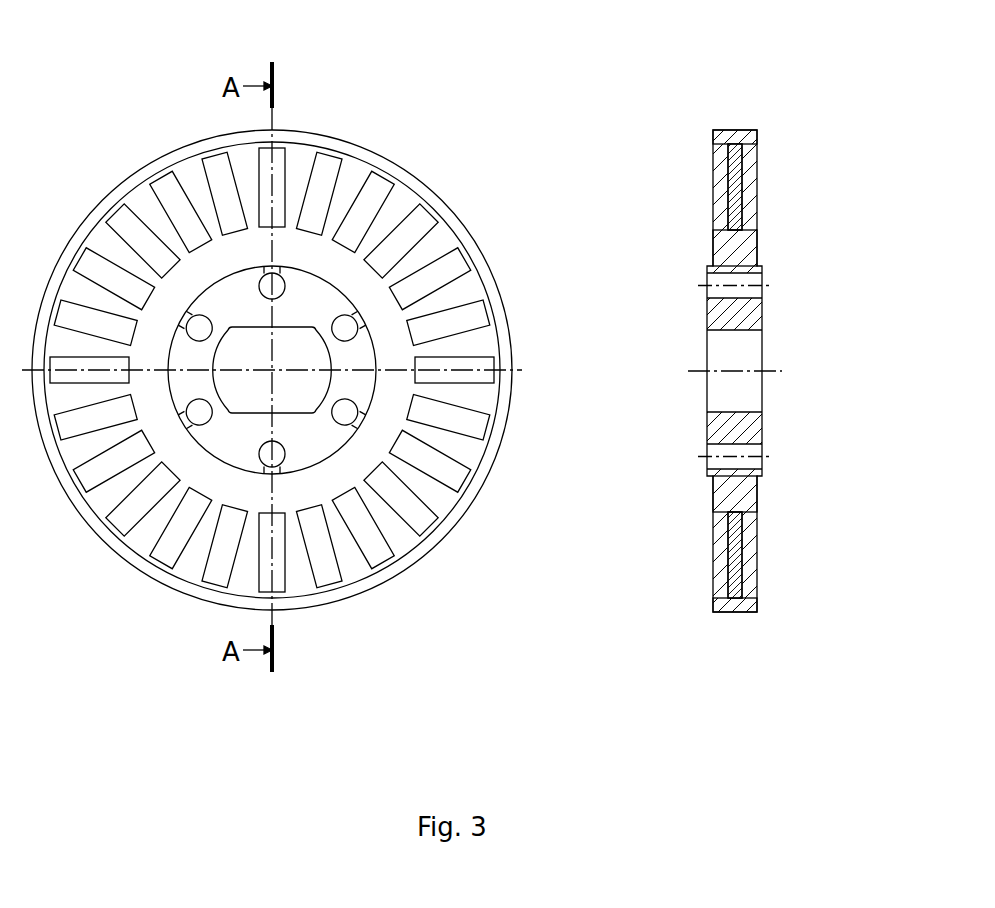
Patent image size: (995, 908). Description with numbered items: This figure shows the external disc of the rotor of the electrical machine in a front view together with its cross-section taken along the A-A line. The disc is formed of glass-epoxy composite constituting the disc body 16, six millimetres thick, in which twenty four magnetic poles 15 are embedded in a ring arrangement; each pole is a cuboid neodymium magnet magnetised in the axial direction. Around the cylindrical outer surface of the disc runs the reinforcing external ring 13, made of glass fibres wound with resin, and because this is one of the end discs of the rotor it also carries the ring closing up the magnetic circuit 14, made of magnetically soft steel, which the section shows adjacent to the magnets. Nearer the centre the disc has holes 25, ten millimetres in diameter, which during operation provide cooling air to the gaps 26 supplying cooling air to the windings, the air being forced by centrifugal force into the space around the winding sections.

The reinforcing external ring 13 is at (791, 306).
The ring closing up the magnetic circuit 14 is at (799, 324).
The magnetic pole 15 is at (788, 360).
The body of the internal disc 16 is at (791, 336).
The hole 25 is at (779, 338).
The gap 26 is at (383, 351).